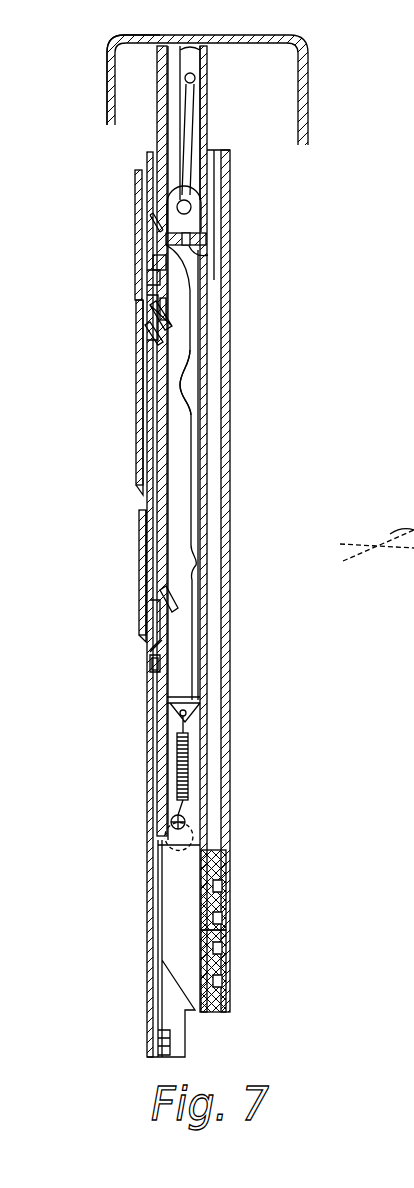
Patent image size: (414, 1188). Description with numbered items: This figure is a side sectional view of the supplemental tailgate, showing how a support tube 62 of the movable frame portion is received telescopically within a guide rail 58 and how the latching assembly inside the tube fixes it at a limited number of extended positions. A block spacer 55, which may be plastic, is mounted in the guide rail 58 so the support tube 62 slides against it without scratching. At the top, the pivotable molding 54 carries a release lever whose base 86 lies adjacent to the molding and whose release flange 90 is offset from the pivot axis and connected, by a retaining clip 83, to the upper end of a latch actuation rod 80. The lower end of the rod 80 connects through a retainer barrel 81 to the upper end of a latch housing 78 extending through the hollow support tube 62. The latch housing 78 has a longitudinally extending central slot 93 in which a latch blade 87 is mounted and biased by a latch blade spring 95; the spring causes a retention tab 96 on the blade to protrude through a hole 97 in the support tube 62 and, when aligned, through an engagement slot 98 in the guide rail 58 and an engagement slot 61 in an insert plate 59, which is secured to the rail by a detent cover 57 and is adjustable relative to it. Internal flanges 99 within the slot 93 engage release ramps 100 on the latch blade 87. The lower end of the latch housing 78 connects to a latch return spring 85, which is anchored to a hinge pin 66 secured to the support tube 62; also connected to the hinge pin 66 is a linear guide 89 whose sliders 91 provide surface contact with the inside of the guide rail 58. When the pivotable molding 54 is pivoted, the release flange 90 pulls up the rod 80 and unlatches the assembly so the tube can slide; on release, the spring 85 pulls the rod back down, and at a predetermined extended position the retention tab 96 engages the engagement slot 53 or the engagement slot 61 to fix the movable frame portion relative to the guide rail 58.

The engagement slot 53 is at (150, 530).
The pivotable molding 54 is at (305, 102).
The block spacer 55 is at (150, 388).
The detent cover 57 is at (136, 190).
The guide rail 58 is at (230, 292).
The insert plate 59 is at (148, 307).
The engagement slot 61 is at (154, 266).
The support tube 62 is at (205, 88).
The hinge pin 66 is at (171, 824).
The latch housing 78 is at (205, 182).
The latch actuation rod 80 is at (185, 138).
The retainer barrel 81 is at (156, 230).
The retaining clip 83 is at (202, 66).
The latch return spring 85 is at (177, 768).
The base 86 is at (152, 46).
The latch blade 87 is at (192, 346).
The linear guide 89 is at (228, 1000).
The release flange 90 is at (185, 84).
The slider 91 is at (228, 866).
The central slot 93 is at (190, 246).
The latch blade spring 95 is at (195, 402).
The retention tab 96 is at (150, 278).
The hole 97 is at (155, 665).
The engagement slot 98 is at (155, 655).
The internal flange 99 is at (150, 310).
The release ramp 100 is at (150, 328).